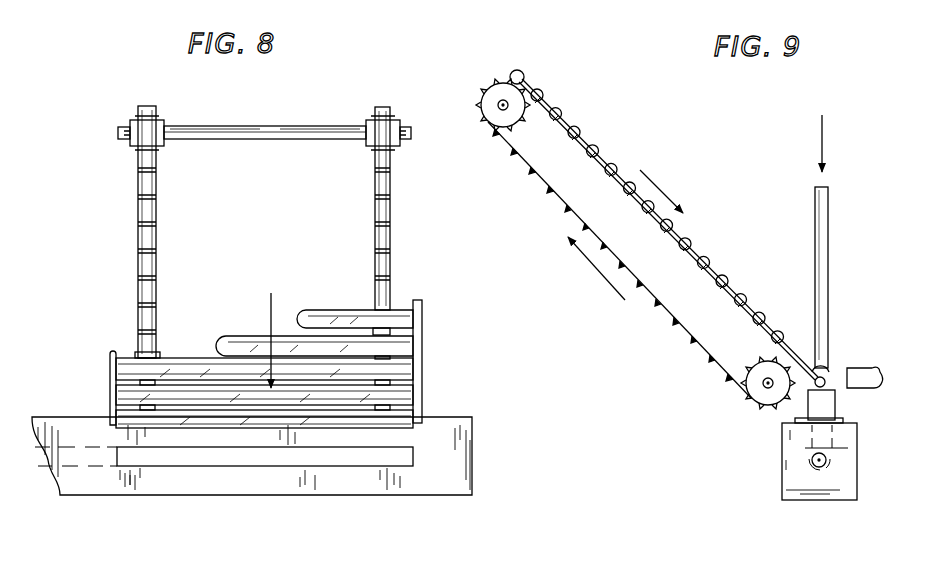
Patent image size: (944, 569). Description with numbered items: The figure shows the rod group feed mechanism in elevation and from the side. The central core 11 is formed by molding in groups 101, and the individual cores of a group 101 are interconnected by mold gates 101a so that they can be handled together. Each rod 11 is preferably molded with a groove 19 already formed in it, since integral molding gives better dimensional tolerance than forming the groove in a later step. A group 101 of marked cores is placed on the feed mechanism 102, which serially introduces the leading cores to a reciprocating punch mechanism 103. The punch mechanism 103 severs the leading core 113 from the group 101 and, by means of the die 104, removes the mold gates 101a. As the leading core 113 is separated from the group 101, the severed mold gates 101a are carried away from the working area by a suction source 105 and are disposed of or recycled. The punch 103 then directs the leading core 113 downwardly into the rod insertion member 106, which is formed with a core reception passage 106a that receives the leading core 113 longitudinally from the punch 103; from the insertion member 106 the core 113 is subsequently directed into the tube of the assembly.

In FIG. 8, the central core 11 is at (404, 311).
In FIG. 9, the central core 11 is at (554, 117).
In FIG. 9, the groove 19 is at (581, 129).
In FIG. 8, the group of cores 101 is at (431, 350).
In FIG. 8, the mold gates 101a is at (110, 383).
In FIG. 8, the feed mechanism 102 is at (403, 221).
In FIG. 9, the feed mechanism 102 is at (548, 203).
In FIG. 9, the reciprocating punch mechanism 103 is at (829, 347).
In FIG. 9, the die 104 is at (838, 405).
In FIG. 9, the suction source 105 is at (877, 389).
In FIG. 8, the rod insertion member 106 is at (468, 473).
In FIG. 9, the rod insertion member 106 is at (790, 472).
In FIG. 8, the core reception passage 106a is at (304, 460).
In FIG. 8, the leading core 113 is at (405, 426).
In FIG. 9, the leading core 113 is at (811, 389).